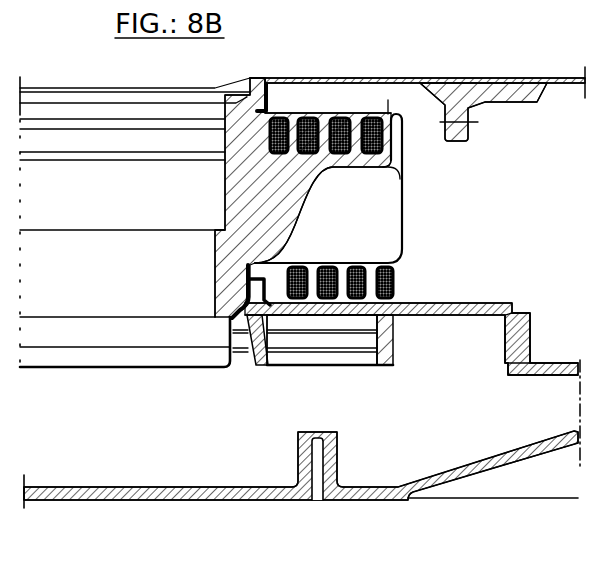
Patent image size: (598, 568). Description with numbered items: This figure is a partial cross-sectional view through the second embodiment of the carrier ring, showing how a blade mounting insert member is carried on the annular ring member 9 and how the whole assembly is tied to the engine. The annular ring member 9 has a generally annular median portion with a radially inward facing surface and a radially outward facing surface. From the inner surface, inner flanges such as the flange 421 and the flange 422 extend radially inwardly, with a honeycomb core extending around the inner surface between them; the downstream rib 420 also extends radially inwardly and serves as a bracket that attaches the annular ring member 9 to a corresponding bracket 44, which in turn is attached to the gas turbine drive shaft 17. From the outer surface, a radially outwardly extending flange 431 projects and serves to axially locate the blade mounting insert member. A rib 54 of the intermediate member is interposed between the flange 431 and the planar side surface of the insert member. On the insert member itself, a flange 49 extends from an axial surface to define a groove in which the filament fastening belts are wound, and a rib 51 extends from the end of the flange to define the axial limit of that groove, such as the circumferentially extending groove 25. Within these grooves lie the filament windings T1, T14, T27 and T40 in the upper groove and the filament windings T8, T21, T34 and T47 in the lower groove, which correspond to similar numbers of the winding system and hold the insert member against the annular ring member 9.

The filament winding T1 is at (280, 117).
The filament winding T14 is at (309, 117).
The filament winding T27 is at (338, 117).
The filament winding T40 is at (370, 117).
The circumferentially extending groove 25 is at (387, 117).
The rib 51 is at (397, 140).
The flange 49 is at (402, 243).
The filament winding T21 is at (328, 265).
The filament winding T8 is at (298, 265).
The filament winding T34 is at (358, 265).
The thermocouple pocket T47 is at (395, 282).
The annular ring member 9 is at (478, 302).
The radially outwardly extending flange 431 is at (245, 282).
The rib 54 is at (245, 293).
The downstream rib 420 is at (508, 332).
The inner flange 421 is at (393, 345).
The bracket 44 is at (525, 352).
The inner flange 422 is at (258, 357).
The gas turbine drive shaft 17 is at (88, 490).